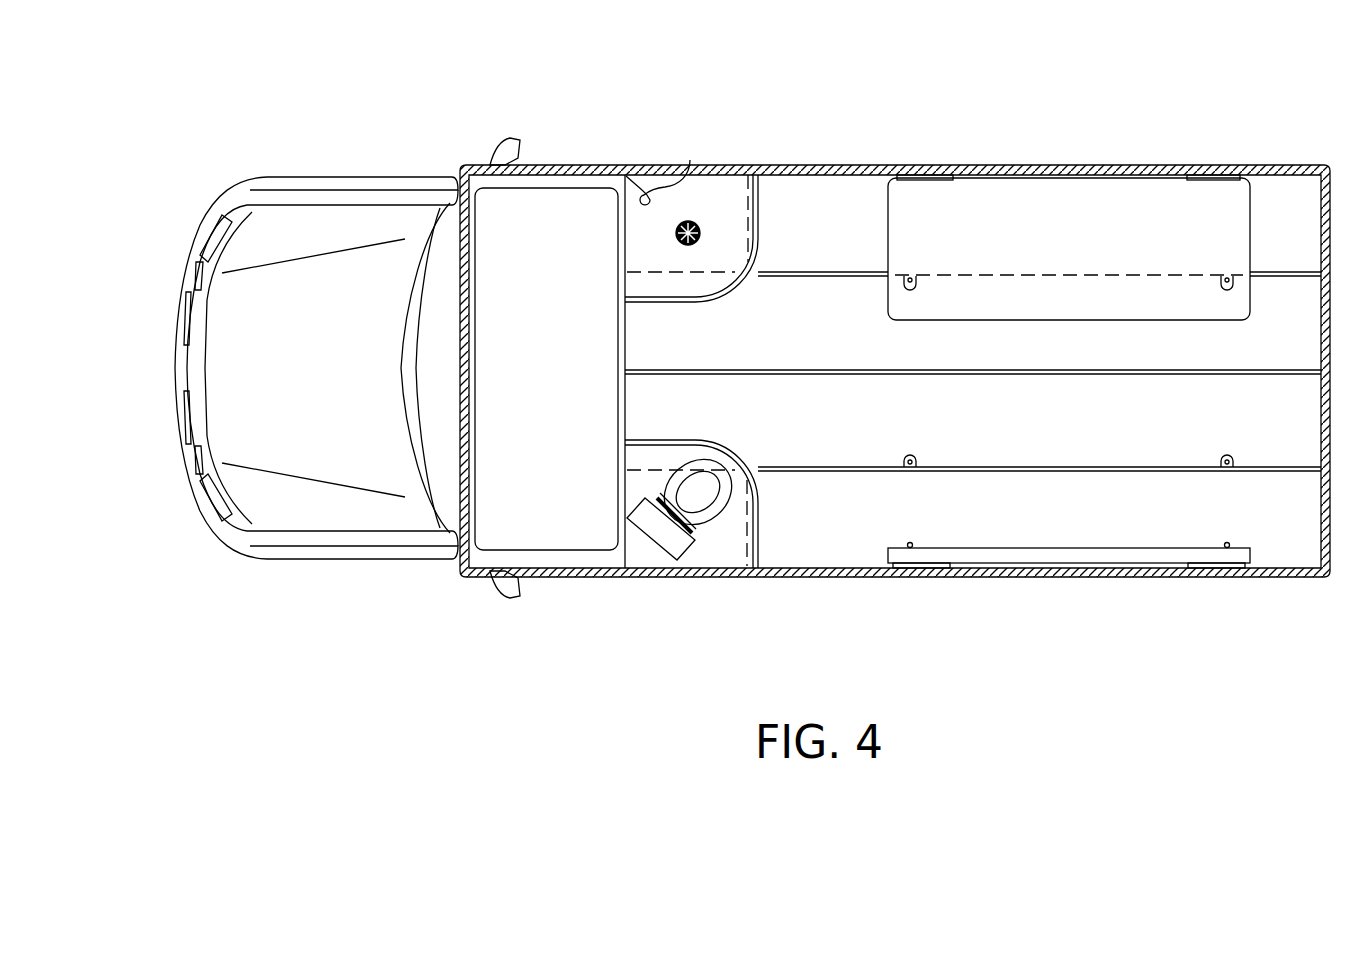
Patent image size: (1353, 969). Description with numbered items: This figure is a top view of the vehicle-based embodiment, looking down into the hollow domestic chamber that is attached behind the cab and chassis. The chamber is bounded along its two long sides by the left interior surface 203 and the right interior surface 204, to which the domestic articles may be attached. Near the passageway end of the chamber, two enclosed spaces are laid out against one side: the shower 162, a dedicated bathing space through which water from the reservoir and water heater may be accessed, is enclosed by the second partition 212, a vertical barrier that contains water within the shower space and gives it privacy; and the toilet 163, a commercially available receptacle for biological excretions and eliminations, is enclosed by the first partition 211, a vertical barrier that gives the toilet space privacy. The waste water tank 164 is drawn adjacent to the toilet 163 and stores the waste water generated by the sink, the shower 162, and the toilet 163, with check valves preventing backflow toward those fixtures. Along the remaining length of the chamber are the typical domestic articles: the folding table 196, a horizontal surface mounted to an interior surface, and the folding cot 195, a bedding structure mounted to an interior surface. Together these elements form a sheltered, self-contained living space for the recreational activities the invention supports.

The shower 162 is at (690, 160).
The toilet 163 is at (692, 542).
The waste water tank 164 is at (698, 495).
The folding cot 195 is at (1200, 556).
The folding table 196 is at (1202, 205).
The left interior surface 203 is at (824, 535).
The right interior surface 204 is at (822, 205).
The first partition 211 is at (777, 520).
The second partition 212 is at (757, 212).